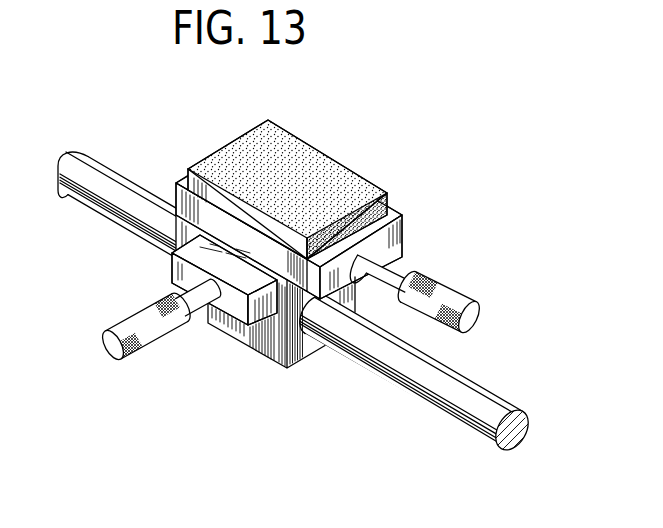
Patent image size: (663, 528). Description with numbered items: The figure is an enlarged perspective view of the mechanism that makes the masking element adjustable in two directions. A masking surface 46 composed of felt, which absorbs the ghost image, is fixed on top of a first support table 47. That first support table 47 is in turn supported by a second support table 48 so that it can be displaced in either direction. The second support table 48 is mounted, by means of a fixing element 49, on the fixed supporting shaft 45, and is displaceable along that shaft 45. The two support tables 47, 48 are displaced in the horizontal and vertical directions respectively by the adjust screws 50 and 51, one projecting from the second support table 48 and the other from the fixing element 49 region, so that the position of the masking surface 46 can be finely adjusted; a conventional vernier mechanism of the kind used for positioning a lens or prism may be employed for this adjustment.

The supporting shaft 45 is at (466, 379).
The masking surface 46 is at (289, 138).
The first support table 47 is at (397, 238).
The second support table 48 is at (176, 262).
The fixing element 49 is at (240, 330).
The adjust screw 50 is at (437, 285).
The adjust screw 51 is at (150, 344).